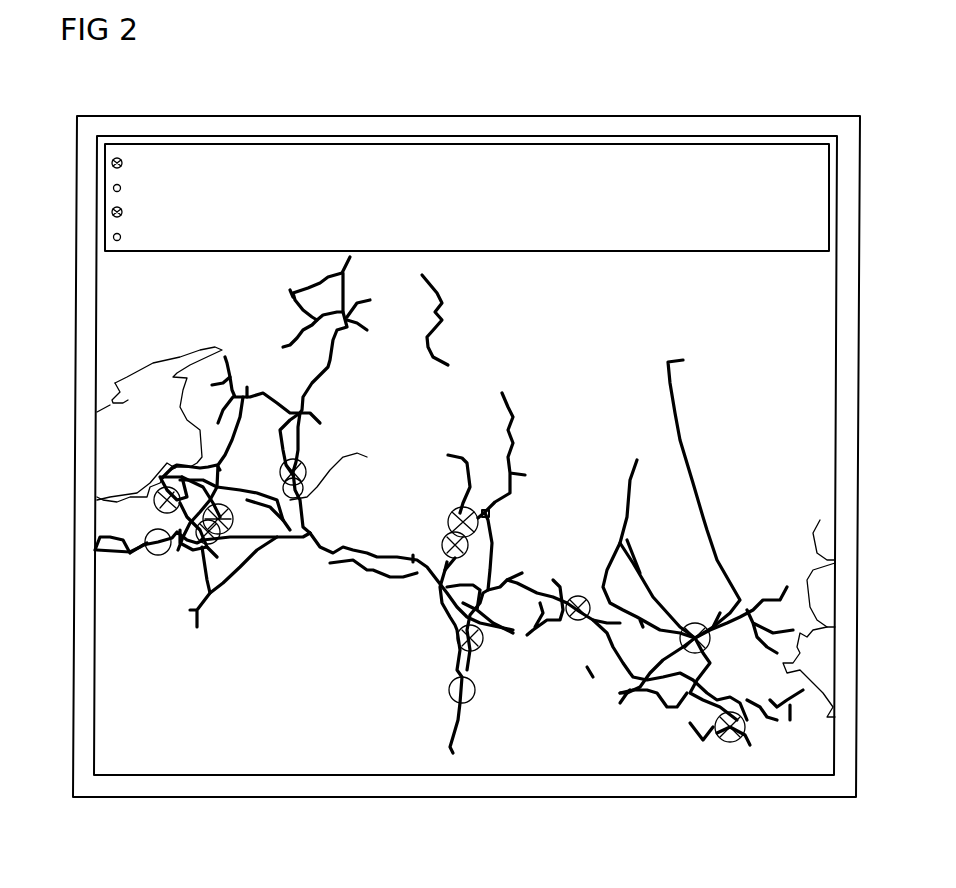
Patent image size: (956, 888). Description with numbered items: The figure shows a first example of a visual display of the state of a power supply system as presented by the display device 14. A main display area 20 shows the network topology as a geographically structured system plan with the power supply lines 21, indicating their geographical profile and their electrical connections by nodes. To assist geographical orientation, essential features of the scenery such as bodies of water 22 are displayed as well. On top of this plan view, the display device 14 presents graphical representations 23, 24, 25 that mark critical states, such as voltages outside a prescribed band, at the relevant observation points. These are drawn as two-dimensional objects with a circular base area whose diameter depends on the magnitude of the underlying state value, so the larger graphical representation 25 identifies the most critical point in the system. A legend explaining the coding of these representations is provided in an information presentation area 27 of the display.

The display device 14 is at (502, 113).
The main display area 20 is at (593, 300).
The power supply lines 21 is at (428, 365).
The bodies of water 22 is at (128, 437).
The graphical representation 23 is at (153, 503).
The graphical representation 24 is at (440, 540).
The graphical representation 25 is at (228, 550).
The information presentation area 27 is at (335, 144).